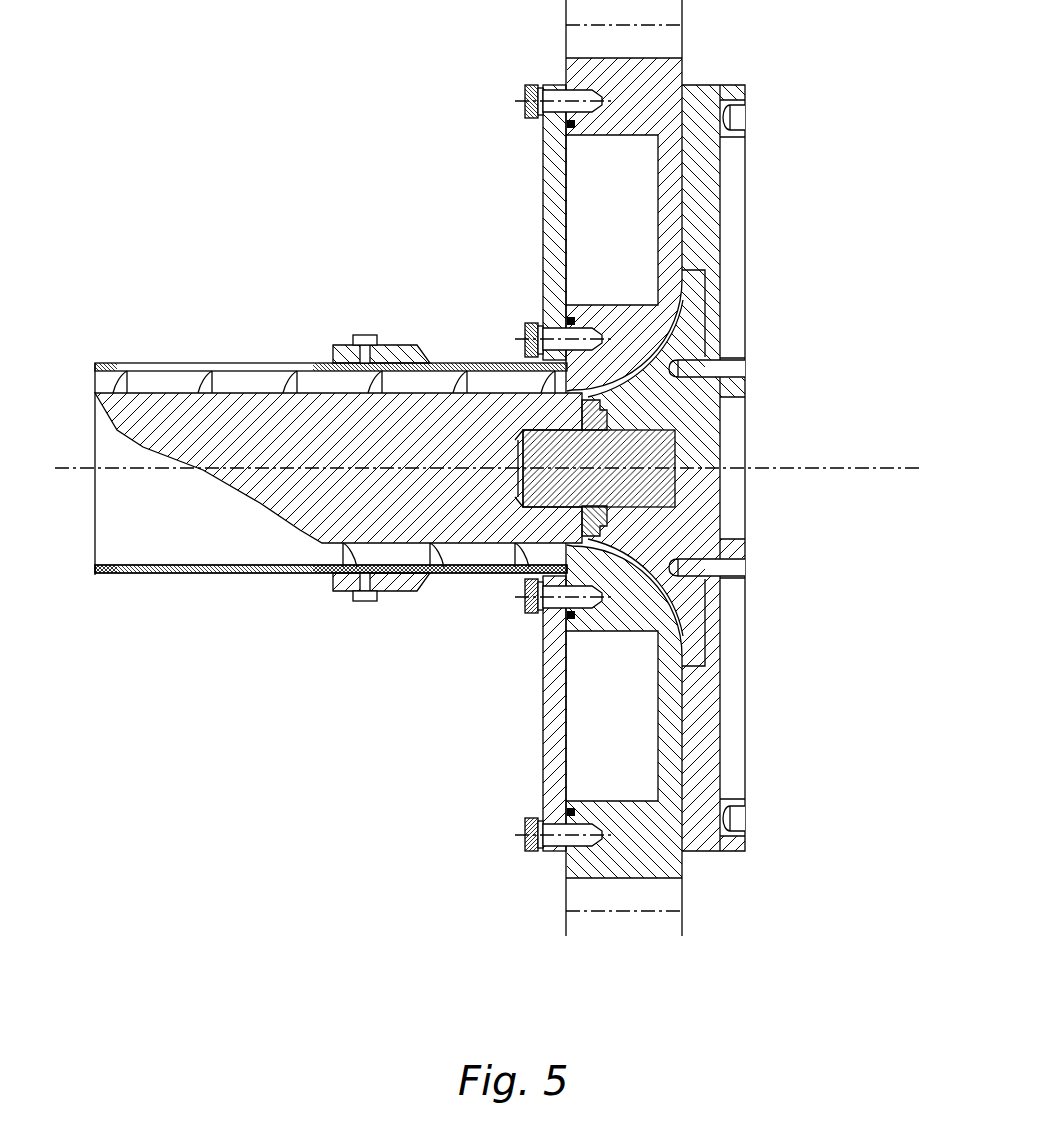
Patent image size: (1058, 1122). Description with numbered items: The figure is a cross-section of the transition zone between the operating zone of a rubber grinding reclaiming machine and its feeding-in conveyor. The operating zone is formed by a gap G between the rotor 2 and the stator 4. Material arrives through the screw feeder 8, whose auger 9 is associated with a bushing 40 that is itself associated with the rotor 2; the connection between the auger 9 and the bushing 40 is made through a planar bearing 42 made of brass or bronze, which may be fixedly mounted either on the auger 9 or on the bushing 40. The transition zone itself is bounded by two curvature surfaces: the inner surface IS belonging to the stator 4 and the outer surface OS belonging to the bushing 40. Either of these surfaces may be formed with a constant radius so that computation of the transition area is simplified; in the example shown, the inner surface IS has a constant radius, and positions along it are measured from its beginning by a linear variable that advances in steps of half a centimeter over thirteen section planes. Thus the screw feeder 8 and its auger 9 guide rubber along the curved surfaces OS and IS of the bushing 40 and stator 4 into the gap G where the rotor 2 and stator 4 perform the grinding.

The rotor 2 is at (707, 206).
The stator 4 is at (665, 243).
The screw feeder 8 is at (293, 575).
The auger 9 is at (460, 408).
The bushing 40 is at (680, 350).
The planar bearing 42 is at (550, 450).
The gap G is at (518, 330).
The outer surface OS is at (652, 383).
The inner surface IS is at (612, 558).